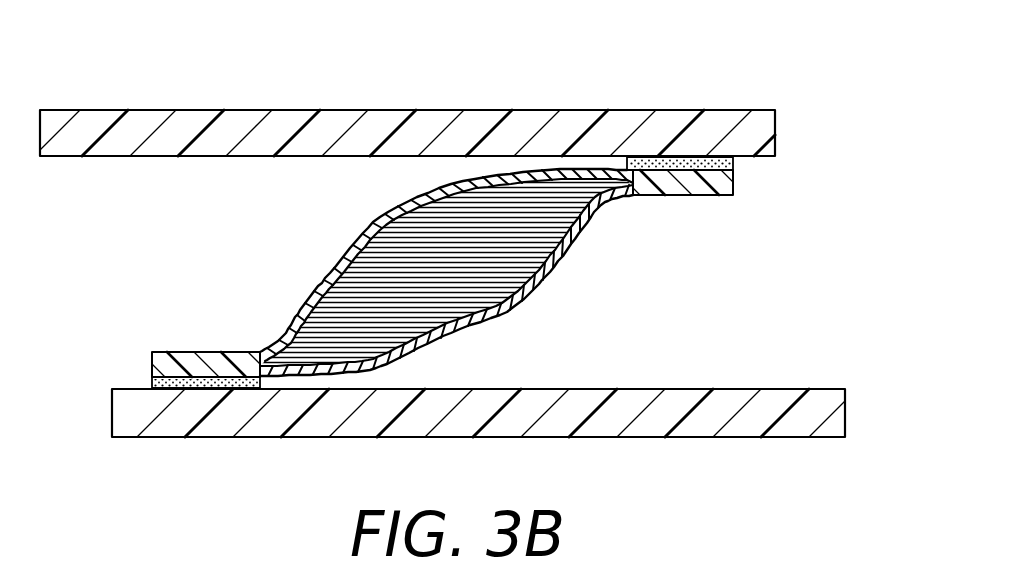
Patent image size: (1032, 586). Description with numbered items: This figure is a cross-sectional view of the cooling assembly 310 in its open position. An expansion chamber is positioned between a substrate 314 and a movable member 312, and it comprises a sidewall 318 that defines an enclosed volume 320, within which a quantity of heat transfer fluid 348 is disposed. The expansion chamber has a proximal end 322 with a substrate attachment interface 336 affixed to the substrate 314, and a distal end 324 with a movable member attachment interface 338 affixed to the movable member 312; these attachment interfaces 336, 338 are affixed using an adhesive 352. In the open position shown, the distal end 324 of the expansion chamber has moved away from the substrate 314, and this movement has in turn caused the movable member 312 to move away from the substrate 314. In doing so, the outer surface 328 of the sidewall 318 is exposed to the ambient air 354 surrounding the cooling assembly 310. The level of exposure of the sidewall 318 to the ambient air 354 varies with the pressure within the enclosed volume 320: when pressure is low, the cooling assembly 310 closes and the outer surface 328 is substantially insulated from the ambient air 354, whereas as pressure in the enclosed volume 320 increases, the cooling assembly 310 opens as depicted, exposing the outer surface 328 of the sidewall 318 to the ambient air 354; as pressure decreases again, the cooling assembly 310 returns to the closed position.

The cooling assembly 310 is at (330, 63).
The movable member 312 is at (585, 110).
The substrate 314 is at (155, 438).
The sidewall 318 is at (368, 230).
The enclosed volume 320 is at (457, 290).
The proximal end 322 is at (151, 358).
The distal end 324 is at (733, 184).
The outer surface 328 is at (322, 283).
The substrate attachment interface 336 is at (238, 380).
The movable member attachment interface 338 is at (698, 168).
The heat transfer fluid 348 is at (520, 305).
The adhesive 352 is at (151, 380).
The ambient air 354 is at (162, 230).